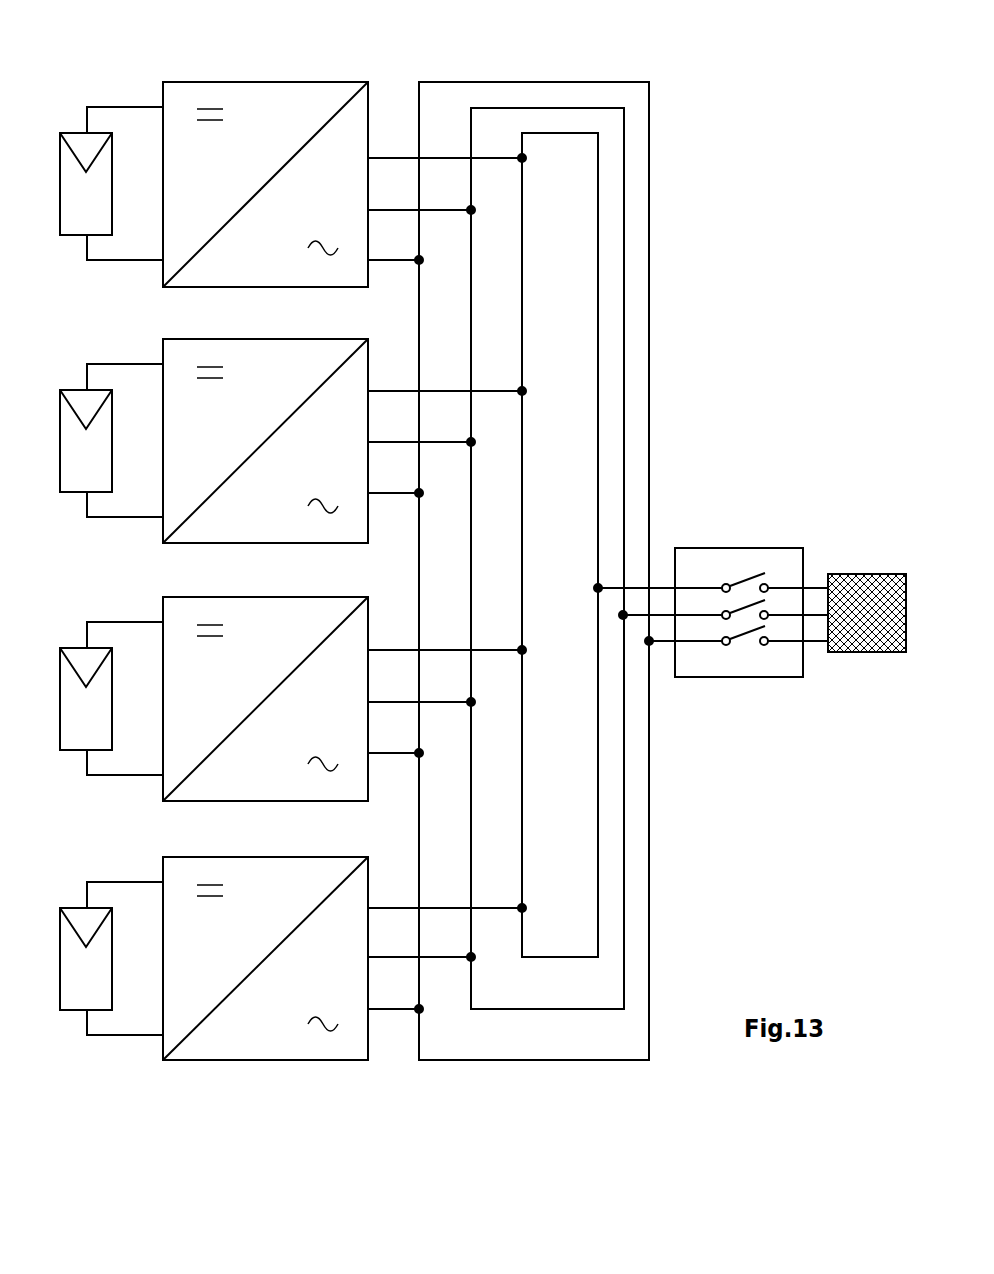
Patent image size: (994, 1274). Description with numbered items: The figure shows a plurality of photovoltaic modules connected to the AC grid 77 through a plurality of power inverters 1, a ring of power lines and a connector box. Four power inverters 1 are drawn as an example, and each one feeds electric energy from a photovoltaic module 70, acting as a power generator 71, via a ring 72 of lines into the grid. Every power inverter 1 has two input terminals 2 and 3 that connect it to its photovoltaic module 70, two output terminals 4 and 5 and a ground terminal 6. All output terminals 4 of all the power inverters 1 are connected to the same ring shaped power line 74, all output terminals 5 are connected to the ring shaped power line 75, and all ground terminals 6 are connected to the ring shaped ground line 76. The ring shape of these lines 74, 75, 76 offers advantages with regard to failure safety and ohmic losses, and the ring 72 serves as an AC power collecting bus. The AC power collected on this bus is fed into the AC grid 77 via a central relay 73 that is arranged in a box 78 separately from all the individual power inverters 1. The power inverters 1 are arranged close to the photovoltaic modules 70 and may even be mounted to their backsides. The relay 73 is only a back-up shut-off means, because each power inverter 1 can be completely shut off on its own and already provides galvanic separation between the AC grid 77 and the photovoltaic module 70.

The power inverter 1 is at (165, 287).
The input terminal 2 is at (128, 107).
The input terminal 3 is at (143, 262).
The output terminal 4 is at (381, 157).
The output terminal 5 is at (380, 208).
The ground terminal 6 is at (380, 258).
The photovoltaic module 70 is at (63, 493).
The power generator 71 is at (68, 137).
The ring 72 is at (379, 537).
The relay 73 is at (730, 572).
The ring shaped power line 74 is at (557, 133).
The ring shaped power line 75 is at (623, 285).
The ring shaped ground line 76 is at (647, 363).
The AC grid 77 is at (863, 652).
The box 78 is at (714, 677).